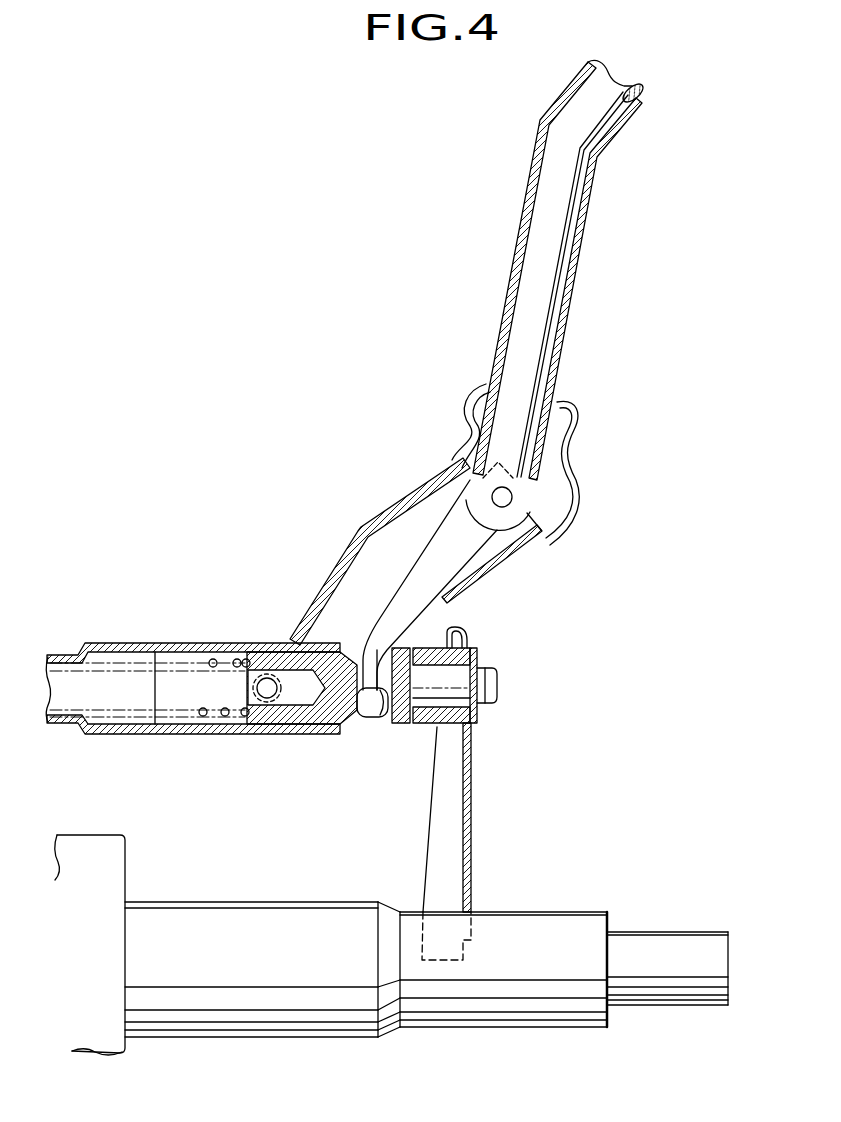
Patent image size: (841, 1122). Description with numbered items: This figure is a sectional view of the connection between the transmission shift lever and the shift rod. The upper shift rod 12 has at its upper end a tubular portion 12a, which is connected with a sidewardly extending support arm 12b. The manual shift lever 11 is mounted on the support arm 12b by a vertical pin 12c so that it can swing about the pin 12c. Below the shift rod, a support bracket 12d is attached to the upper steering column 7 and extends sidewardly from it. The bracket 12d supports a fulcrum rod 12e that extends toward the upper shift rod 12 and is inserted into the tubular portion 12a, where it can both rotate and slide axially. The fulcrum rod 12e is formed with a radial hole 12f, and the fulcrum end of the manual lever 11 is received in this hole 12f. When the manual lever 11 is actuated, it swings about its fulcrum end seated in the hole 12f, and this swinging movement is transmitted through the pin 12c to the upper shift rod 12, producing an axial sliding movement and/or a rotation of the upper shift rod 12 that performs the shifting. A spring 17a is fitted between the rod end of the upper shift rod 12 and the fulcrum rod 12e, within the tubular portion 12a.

The upper steering column 7 is at (318, 927).
The manual shift lever 11 is at (553, 233).
The upper shift rod 12 is at (192, 742).
The tubular portion 12a is at (190, 641).
The support arm 12b is at (368, 532).
The vertical pin 12c is at (512, 498).
The support bracket 12d is at (471, 818).
The fulcrum rod 12e is at (345, 723).
The radial hole 12f is at (413, 633).
The spring 17a is at (237, 647).